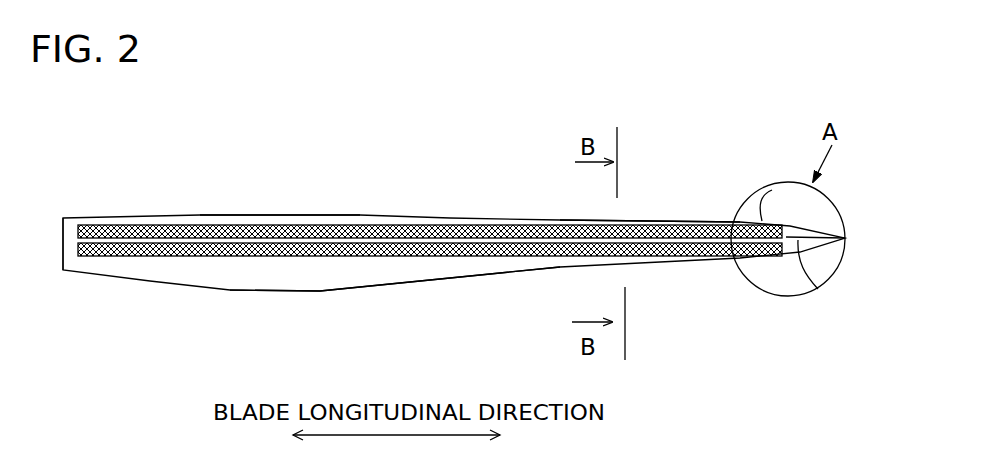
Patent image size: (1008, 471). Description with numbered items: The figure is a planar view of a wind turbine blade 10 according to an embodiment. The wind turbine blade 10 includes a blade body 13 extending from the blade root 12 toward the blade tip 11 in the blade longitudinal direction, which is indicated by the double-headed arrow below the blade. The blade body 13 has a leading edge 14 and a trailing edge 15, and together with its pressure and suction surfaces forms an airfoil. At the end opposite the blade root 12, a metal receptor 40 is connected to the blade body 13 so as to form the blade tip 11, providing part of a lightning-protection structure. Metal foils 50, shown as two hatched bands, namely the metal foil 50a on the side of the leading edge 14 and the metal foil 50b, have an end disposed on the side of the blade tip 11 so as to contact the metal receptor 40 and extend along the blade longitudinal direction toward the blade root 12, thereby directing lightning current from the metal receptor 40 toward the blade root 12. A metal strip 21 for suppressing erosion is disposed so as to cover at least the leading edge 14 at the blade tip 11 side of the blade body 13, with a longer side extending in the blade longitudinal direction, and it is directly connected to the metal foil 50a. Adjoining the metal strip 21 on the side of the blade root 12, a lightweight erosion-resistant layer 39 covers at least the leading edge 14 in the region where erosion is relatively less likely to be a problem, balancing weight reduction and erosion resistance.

The wind turbine blade 10 is at (500, 176).
The blade tip 11 is at (845, 237).
The blade root 12 is at (59, 218).
The blade body 13 is at (426, 282).
The leading edge 14 is at (325, 214).
The trailing edge 15 is at (317, 292).
The metal strip 21 is at (772, 190).
The erosion-resistant layer 39 is at (667, 219).
The metal receptor 40 is at (818, 289).
The metal foils 50 is at (430, 181).
The metal foil on the leading edge side 50a is at (167, 225).
The metal foil on the trailing edge side 50b is at (198, 244).